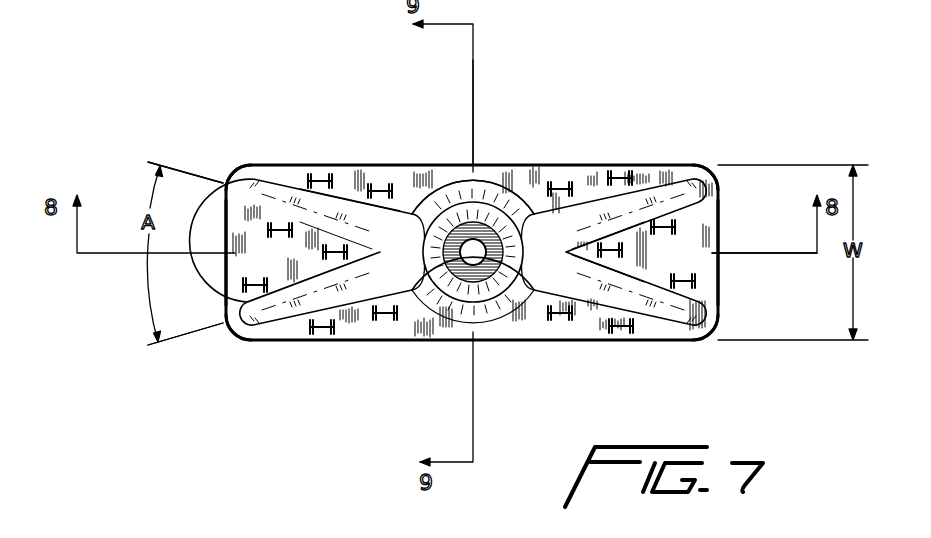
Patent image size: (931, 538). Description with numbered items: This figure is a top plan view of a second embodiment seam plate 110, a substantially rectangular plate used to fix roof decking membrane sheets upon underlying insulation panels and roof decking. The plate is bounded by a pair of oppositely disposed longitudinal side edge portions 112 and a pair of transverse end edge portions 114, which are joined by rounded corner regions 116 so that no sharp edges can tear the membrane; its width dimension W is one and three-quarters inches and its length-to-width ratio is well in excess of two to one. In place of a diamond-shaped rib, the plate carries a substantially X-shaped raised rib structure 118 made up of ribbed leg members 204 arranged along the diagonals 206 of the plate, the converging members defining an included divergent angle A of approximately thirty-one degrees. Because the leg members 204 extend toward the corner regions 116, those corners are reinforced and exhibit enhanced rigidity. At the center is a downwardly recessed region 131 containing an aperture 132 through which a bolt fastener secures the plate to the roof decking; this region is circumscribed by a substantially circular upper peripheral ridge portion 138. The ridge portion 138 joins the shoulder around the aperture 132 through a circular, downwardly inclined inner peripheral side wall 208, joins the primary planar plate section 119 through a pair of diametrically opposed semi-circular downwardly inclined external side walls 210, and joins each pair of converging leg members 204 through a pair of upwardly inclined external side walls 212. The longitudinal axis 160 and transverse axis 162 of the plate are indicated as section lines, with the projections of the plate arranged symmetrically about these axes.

The seam plate 110 is at (697, 58).
The longitudinal side edge portion 112 is at (482, 173).
The transverse end edge portion 114 is at (228, 238).
The corner region 116 is at (232, 180).
The rib structure 118 is at (540, 200).
The primary planar plate section 119 is at (355, 187).
The central downwardly recessed region 131 is at (497, 285).
The aperture 132 is at (458, 200).
The upper peripheral ridge portion 138 is at (510, 210).
The longitudinal axis 160 is at (772, 253).
The transverse axis 162 is at (475, 80).
The ribbed leg member 204 is at (280, 182).
The diagonal 206 is at (182, 170).
The inner peripheral side wall 208 is at (423, 213).
The external side wall 210 is at (462, 237).
The upwardly inclined external side wall 212 is at (578, 300).